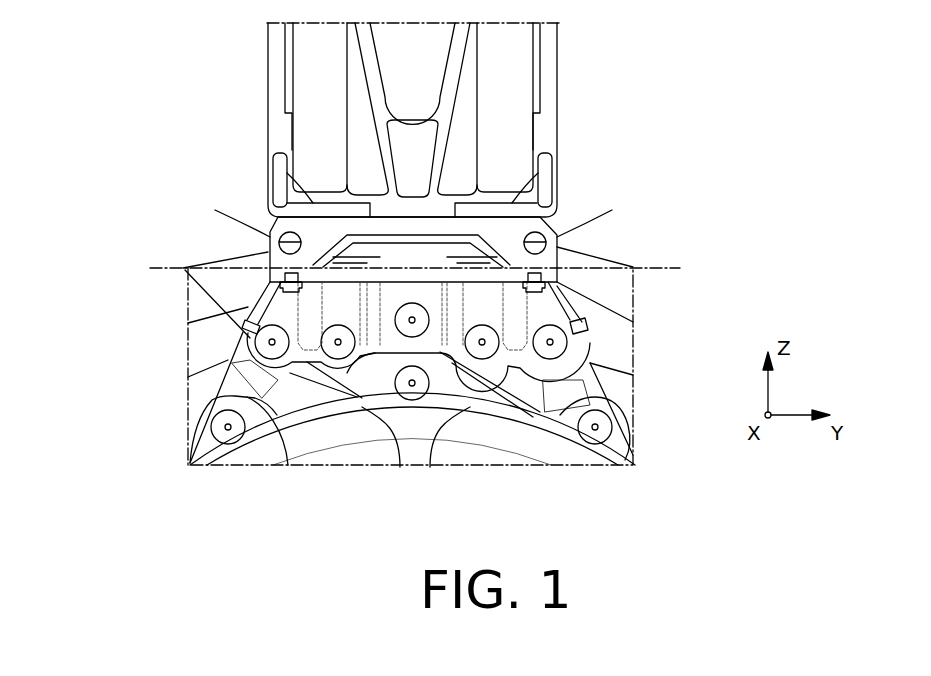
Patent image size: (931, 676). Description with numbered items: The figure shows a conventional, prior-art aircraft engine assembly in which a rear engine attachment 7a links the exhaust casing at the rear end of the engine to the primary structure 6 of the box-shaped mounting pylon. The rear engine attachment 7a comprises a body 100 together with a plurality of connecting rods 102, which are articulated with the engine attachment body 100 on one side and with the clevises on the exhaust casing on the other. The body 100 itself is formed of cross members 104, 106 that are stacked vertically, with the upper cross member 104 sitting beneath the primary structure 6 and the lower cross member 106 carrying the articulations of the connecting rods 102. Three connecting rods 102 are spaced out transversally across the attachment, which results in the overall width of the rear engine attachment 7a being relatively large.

The primary structure 6 is at (268, 73).
The engine attachment body 100 is at (116, 178).
The cross member 104 is at (270, 233).
The cross member 106 is at (247, 337).
The connecting rods 102 is at (365, 372).
The rear engine attachment 7a is at (572, 292).